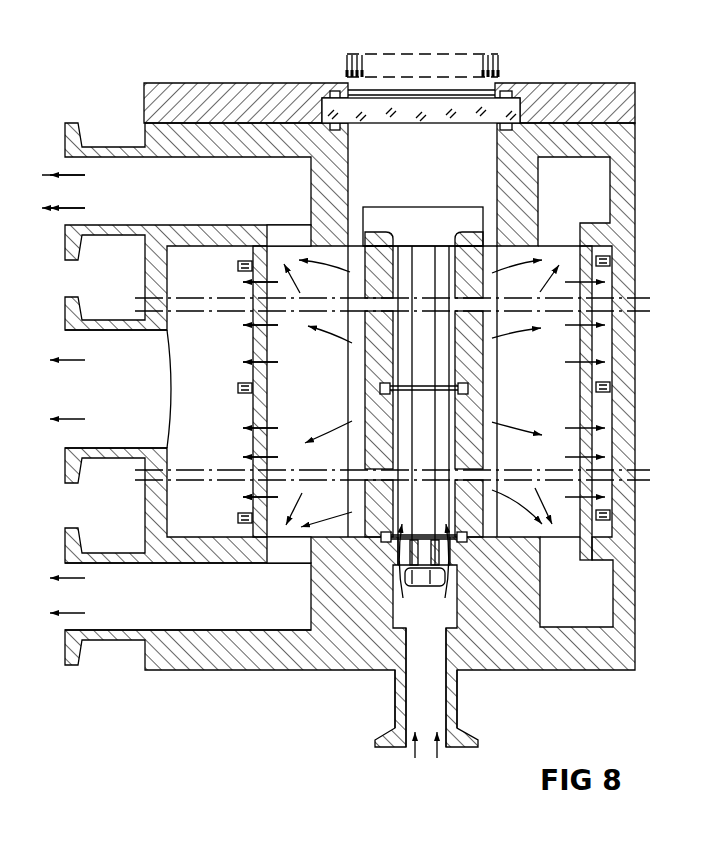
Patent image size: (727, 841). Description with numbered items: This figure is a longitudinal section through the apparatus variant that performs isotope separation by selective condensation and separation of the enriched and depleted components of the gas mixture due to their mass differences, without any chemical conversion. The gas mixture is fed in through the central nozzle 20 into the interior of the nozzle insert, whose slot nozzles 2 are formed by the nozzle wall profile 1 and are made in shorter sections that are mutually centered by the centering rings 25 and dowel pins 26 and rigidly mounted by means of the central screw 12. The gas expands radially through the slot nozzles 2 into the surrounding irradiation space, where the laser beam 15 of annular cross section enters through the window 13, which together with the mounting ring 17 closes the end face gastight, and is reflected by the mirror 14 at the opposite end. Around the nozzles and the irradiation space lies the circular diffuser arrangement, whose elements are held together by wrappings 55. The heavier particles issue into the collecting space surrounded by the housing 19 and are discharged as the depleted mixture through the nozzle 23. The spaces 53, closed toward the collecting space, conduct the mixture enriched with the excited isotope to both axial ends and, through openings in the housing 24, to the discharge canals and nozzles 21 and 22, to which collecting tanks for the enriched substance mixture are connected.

The nozzle wall profile 1 is at (477, 378).
The slot nozzles 2 is at (478, 497).
The central screw 12 is at (427, 412).
The window 13 is at (497, 101).
The mirror 14 is at (362, 539).
The laser beam 15 is at (359, 57).
The mounting ring 17 is at (221, 93).
The housing 19 is at (152, 513).
The central nozzle 20 is at (455, 712).
The discharge nozzle 21 is at (68, 123).
The discharge nozzle 22 is at (71, 655).
The nozzle 23 is at (72, 466).
The housing 24 is at (285, 237).
The centering rings 25 is at (402, 245).
The dowel pins 26 is at (378, 390).
The spaces 53 is at (617, 252).
The wrappings 55 is at (237, 266).